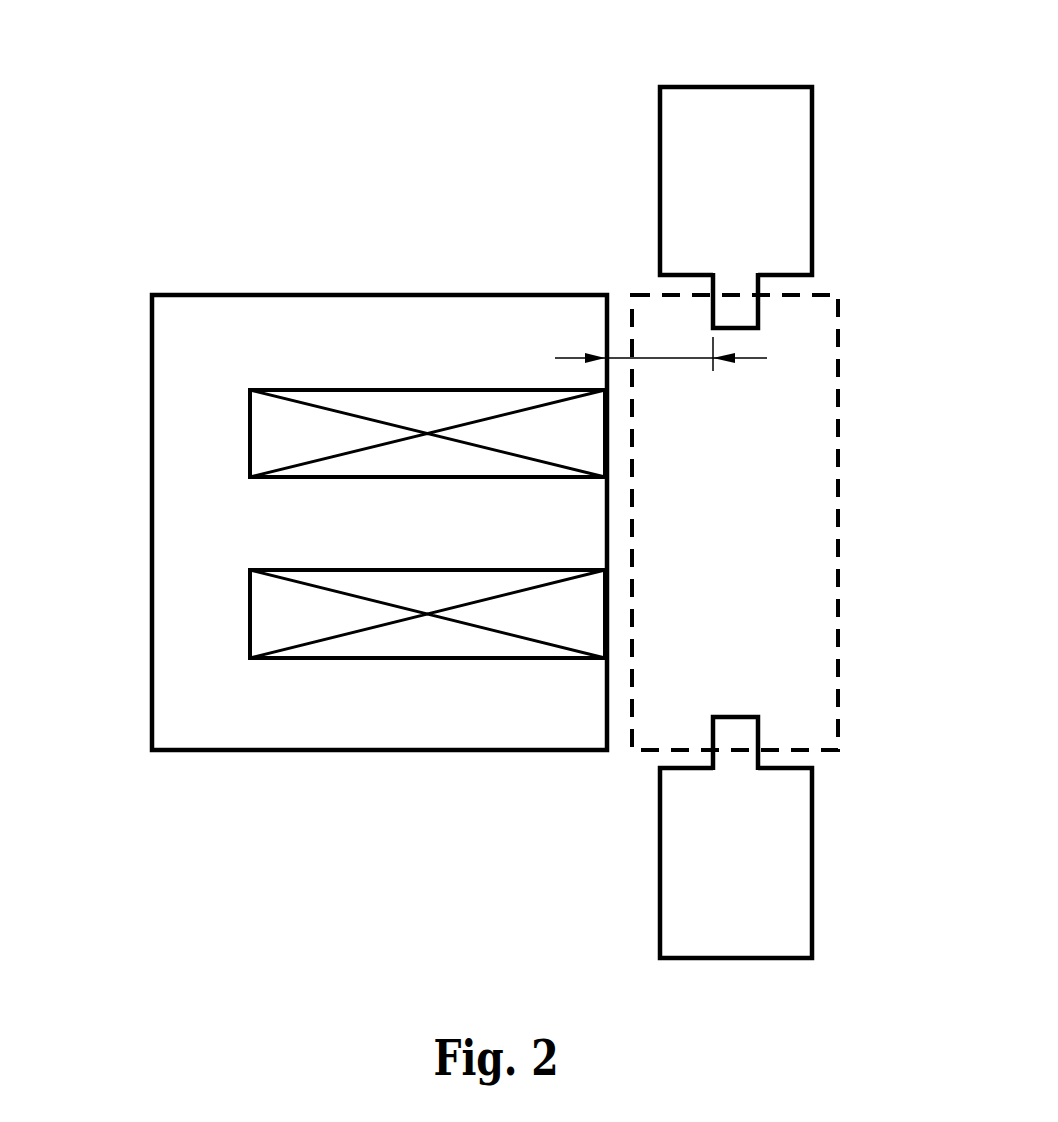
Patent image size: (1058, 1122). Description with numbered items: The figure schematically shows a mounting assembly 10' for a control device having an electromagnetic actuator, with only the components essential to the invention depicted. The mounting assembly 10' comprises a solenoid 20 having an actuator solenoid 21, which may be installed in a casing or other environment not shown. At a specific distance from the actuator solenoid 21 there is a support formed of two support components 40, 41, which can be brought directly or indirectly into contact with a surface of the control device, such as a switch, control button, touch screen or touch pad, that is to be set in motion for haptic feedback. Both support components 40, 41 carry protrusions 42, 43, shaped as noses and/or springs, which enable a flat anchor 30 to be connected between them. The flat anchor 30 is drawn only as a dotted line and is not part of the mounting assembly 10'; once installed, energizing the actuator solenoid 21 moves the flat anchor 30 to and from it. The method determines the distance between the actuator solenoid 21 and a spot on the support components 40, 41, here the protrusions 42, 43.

The mounting assembly 10' is at (499, 484).
The solenoid 20 is at (402, 310).
The actuator solenoid 21 is at (267, 424).
The flat anchor 30 is at (822, 440).
The support component 40 is at (795, 152).
The support component 41 is at (795, 873).
The protrusion 42 is at (743, 307).
The protrusion 43 is at (743, 738).